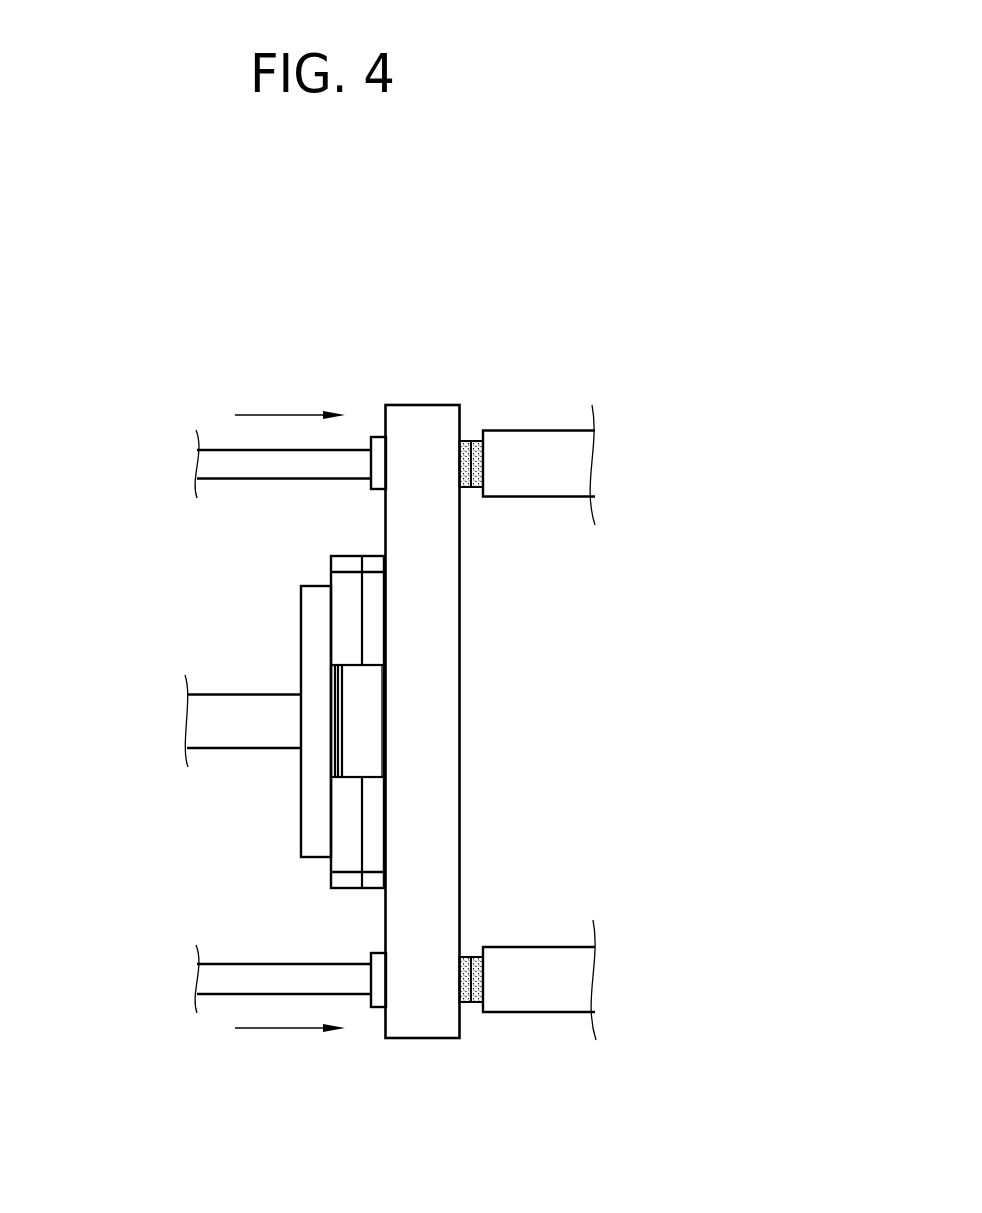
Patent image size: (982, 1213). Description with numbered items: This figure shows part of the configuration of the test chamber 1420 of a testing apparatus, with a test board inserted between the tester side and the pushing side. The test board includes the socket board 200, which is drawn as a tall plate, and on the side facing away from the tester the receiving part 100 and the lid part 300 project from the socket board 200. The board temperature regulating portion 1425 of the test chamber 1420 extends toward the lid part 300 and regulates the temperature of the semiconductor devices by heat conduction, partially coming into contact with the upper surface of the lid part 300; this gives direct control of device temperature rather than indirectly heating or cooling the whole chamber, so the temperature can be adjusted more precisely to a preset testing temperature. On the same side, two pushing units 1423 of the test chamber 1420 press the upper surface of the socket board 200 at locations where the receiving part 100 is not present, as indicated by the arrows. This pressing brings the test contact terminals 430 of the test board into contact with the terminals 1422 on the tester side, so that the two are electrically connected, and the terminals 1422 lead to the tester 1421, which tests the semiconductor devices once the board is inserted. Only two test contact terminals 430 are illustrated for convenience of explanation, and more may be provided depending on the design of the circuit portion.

The test chamber 1420 is at (666, 304).
The socket board 200 is at (420, 405).
The test contact terminal 430 is at (466, 440).
The terminal 1422 is at (477, 490).
The tester 1421 is at (588, 466).
The pushing unit 1423 is at (208, 463).
The board temperature regulating portion 1425 is at (195, 720).
The lid part 300 is at (343, 597).
The receiving part 100 is at (367, 631).